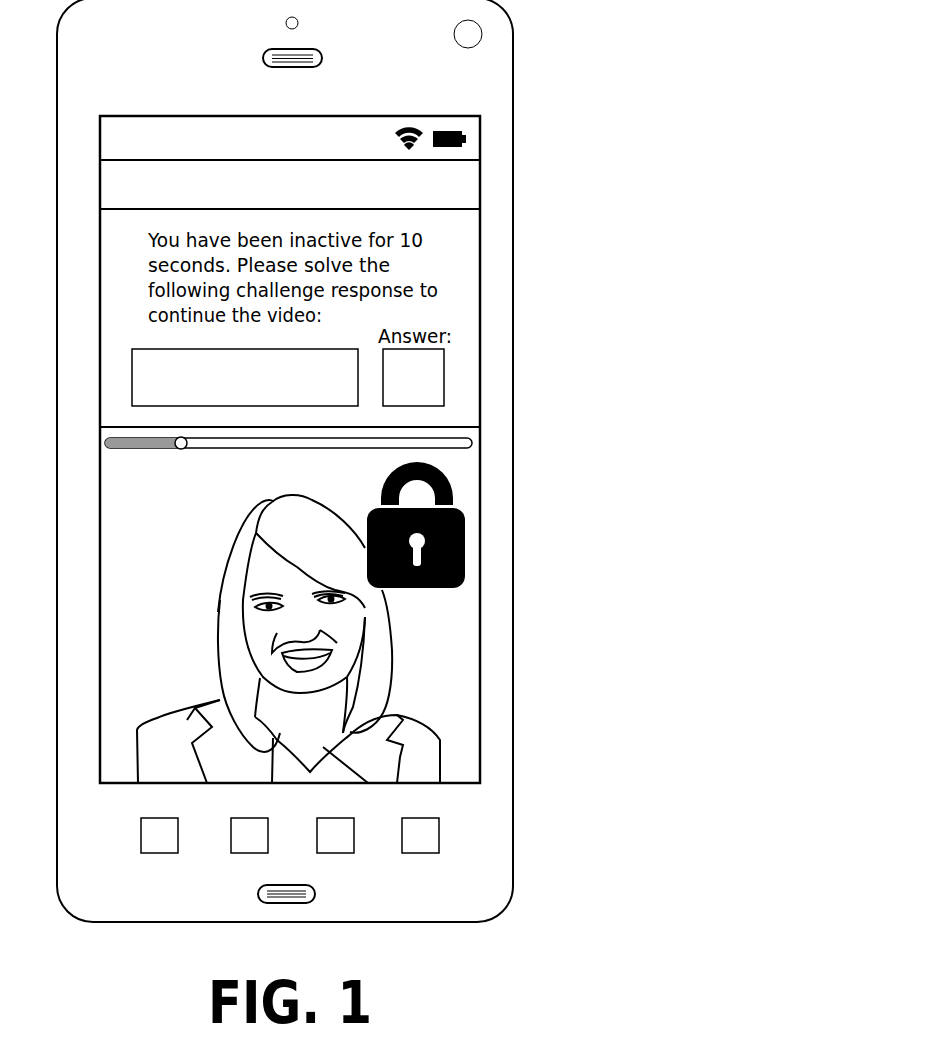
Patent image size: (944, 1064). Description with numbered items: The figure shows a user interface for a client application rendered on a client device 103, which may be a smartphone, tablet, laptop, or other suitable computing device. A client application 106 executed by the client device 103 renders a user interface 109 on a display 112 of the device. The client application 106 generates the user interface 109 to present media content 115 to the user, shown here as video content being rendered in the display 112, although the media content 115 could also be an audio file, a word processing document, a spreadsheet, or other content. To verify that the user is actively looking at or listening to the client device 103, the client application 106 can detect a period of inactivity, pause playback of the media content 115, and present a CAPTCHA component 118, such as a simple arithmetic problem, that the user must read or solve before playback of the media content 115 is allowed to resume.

The client device 103 is at (513, 57).
The client application 106 is at (290, 191).
The user interface 109 is at (100, 783).
The display 112 is at (480, 141).
The media content 115 is at (288, 610).
The CAPTCHA component 118 is at (132, 377).